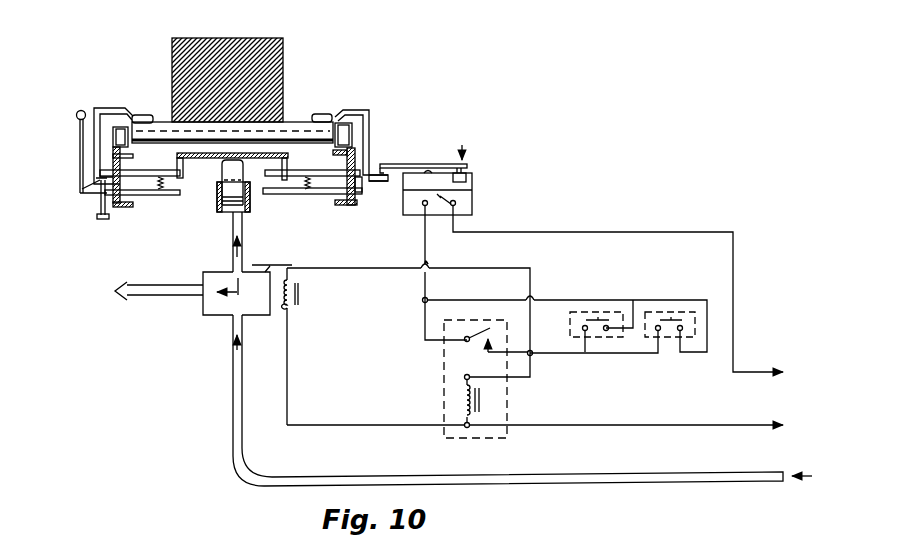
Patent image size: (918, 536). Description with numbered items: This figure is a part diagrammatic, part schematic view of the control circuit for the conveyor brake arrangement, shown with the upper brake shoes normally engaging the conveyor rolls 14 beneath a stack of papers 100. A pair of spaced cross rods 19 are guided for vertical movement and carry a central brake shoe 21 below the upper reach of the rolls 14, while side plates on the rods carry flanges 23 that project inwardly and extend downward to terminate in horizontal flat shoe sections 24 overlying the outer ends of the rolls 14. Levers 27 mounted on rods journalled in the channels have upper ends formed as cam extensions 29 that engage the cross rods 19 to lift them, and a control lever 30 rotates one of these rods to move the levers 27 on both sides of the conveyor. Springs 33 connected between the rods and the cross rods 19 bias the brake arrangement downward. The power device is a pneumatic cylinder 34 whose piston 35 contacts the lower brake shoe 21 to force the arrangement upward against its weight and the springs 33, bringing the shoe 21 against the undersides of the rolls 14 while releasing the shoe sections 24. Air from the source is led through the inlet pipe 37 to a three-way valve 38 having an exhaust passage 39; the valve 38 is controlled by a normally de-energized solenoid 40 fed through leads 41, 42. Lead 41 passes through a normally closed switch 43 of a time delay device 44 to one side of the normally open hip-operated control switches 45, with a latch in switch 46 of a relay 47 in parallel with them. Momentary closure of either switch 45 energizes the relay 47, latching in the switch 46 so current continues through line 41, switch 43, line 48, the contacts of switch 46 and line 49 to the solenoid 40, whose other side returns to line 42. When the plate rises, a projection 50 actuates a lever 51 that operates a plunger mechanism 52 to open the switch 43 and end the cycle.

The papers 100 is at (270, 39).
The rolls 14 is at (294, 125).
The horizontal flat shoe sections 24 is at (143, 113).
The flanges 23 is at (110, 108).
The control lever 30 is at (78, 156).
The cam extensions 29 is at (80, 197).
The lever 27 is at (100, 216).
The central brake shoe 21 is at (178, 167).
The cross rods 19 is at (140, 172).
The piston 35 is at (197, 157).
The cylinder 34 is at (220, 178).
The springs 33 is at (310, 187).
The projection 50 is at (378, 182).
The lever 51 is at (410, 163).
The plunger mechanism 52 is at (467, 167).
The time delay device 44 is at (473, 192).
The normally closed switch 43 is at (465, 209).
The lead 41 is at (733, 353).
The line 48 is at (424, 285).
The line 49 is at (346, 268).
The latch in switch 46 is at (486, 331).
The relay 47 is at (474, 398).
The control switches 45 is at (599, 317).
The lead 42 is at (680, 423).
The solenoid 40 is at (292, 308).
The three-way valve 38 is at (213, 311).
The exhaust passage 39 is at (152, 297).
The inlet pipe 37 is at (571, 485).